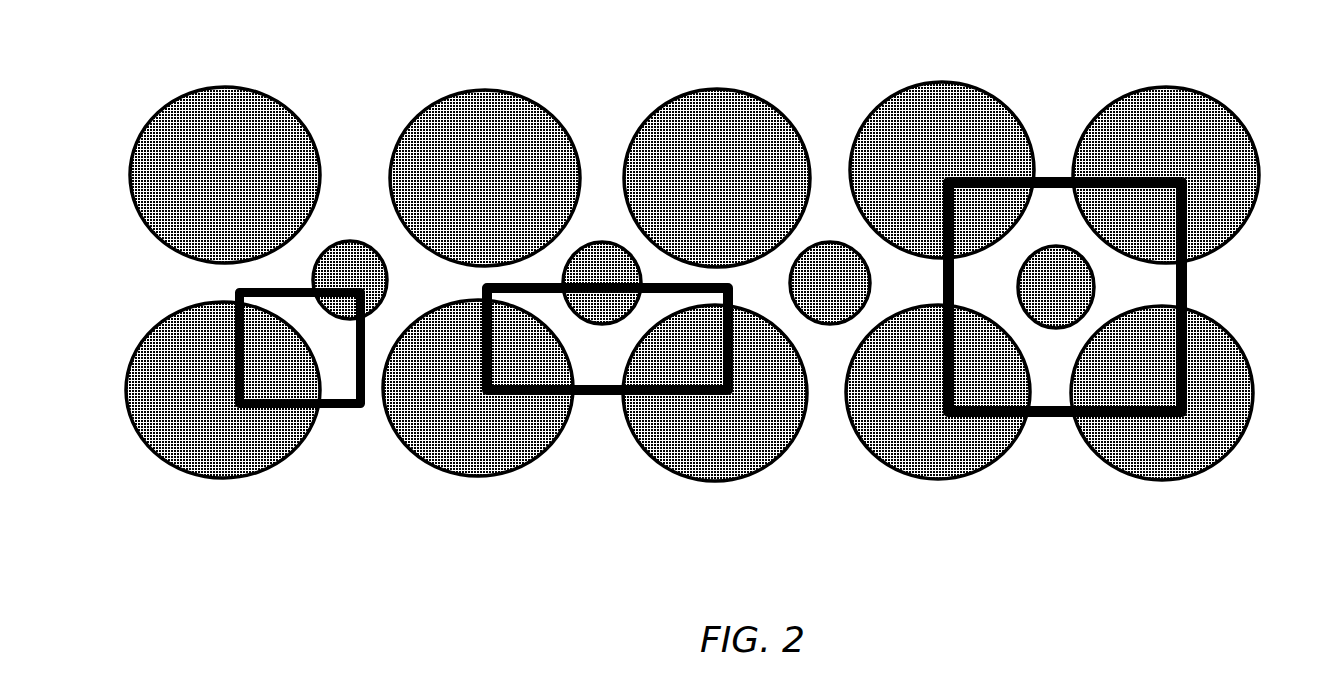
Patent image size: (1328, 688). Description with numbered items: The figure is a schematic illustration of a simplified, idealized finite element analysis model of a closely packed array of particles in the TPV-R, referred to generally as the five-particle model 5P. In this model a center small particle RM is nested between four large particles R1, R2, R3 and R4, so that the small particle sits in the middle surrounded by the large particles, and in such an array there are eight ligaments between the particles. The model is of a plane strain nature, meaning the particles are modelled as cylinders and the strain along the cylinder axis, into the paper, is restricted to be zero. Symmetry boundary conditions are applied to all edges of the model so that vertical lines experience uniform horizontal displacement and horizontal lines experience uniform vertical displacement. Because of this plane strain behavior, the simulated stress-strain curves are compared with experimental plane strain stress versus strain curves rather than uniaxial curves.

The large particle R1 is at (958, 478).
The large particle R2 is at (1183, 476).
The large particle R3 is at (1215, 100).
The large particle R4 is at (920, 82).
The center small particle RM is at (1060, 247).
The 5-particle model 5P is at (1066, 76).